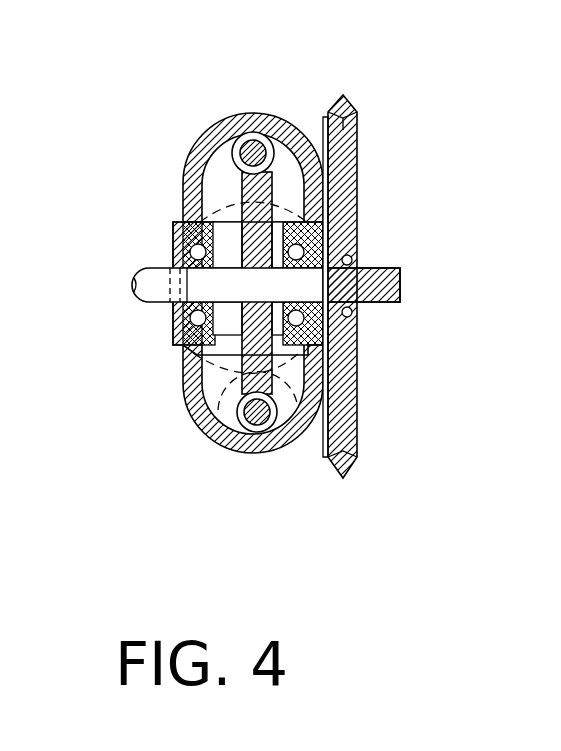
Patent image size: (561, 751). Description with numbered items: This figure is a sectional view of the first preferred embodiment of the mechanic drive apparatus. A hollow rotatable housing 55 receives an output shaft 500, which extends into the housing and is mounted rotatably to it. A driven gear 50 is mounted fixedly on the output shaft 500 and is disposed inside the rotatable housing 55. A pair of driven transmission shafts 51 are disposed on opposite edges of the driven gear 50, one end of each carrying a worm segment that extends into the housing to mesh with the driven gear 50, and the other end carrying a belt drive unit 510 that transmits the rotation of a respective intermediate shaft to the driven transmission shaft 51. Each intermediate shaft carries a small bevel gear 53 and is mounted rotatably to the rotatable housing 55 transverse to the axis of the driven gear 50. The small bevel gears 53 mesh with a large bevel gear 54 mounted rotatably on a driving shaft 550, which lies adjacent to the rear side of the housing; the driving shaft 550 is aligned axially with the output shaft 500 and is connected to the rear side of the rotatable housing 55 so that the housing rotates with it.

The driven gear 50 is at (300, 344).
The driven transmission shafts 51 is at (255, 140).
The small bevel gear 53 is at (360, 196).
The large bevel gear 54 is at (352, 140).
The rotatable housing 55 is at (196, 168).
The output shaft 500 is at (132, 285).
The belt drive unit 510 is at (190, 402).
The driving shaft 550 is at (400, 287).